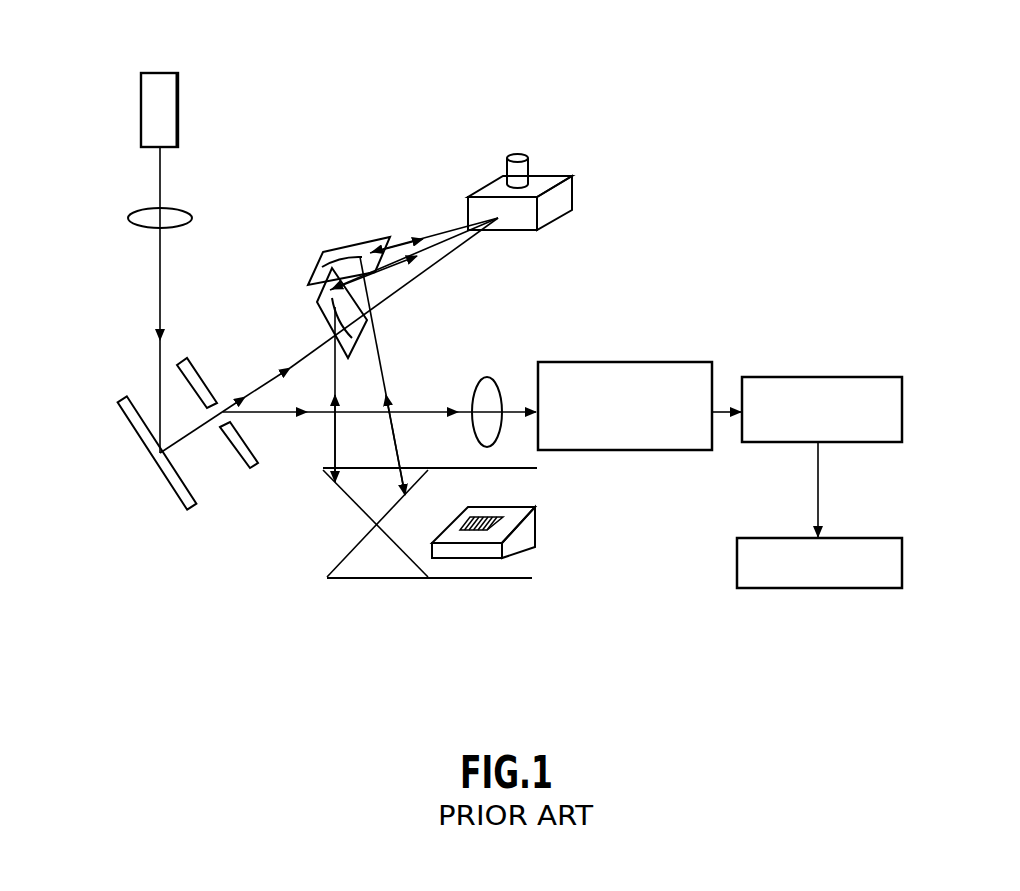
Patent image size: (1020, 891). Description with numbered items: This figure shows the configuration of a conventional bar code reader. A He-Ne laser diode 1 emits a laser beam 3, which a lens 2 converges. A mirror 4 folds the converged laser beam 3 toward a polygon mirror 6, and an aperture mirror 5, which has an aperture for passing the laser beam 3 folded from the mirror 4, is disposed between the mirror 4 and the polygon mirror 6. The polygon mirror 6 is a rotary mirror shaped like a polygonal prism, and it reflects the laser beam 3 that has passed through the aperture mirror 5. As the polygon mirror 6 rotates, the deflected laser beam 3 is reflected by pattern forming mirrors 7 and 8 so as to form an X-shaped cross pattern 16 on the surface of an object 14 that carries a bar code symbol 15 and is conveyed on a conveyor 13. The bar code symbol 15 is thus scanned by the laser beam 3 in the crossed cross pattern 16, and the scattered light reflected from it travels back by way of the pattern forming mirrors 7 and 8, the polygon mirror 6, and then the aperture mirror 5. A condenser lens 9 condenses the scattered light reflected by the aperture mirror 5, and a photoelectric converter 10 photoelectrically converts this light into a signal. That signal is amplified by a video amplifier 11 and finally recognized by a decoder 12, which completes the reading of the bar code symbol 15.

The He-Ne laser diode 1 is at (204, 46).
The lens 2 is at (130, 212).
The laser beam 3 is at (160, 303).
The mirror 4 is at (165, 480).
The aperture mirror 5 is at (250, 468).
The polygon mirror 6 is at (572, 176).
The pattern forming mirror 7 is at (325, 251).
The pattern forming mirror 8 is at (318, 317).
The condenser lens 9 is at (480, 378).
The photo-electric converter 10 is at (640, 362).
The video amplifier 11 is at (787, 377).
The decoder 12 is at (878, 538).
The conveyor 13 is at (458, 580).
The object 14 is at (477, 553).
The bar code symbol 15 is at (490, 520).
The cross pattern 16 is at (347, 562).